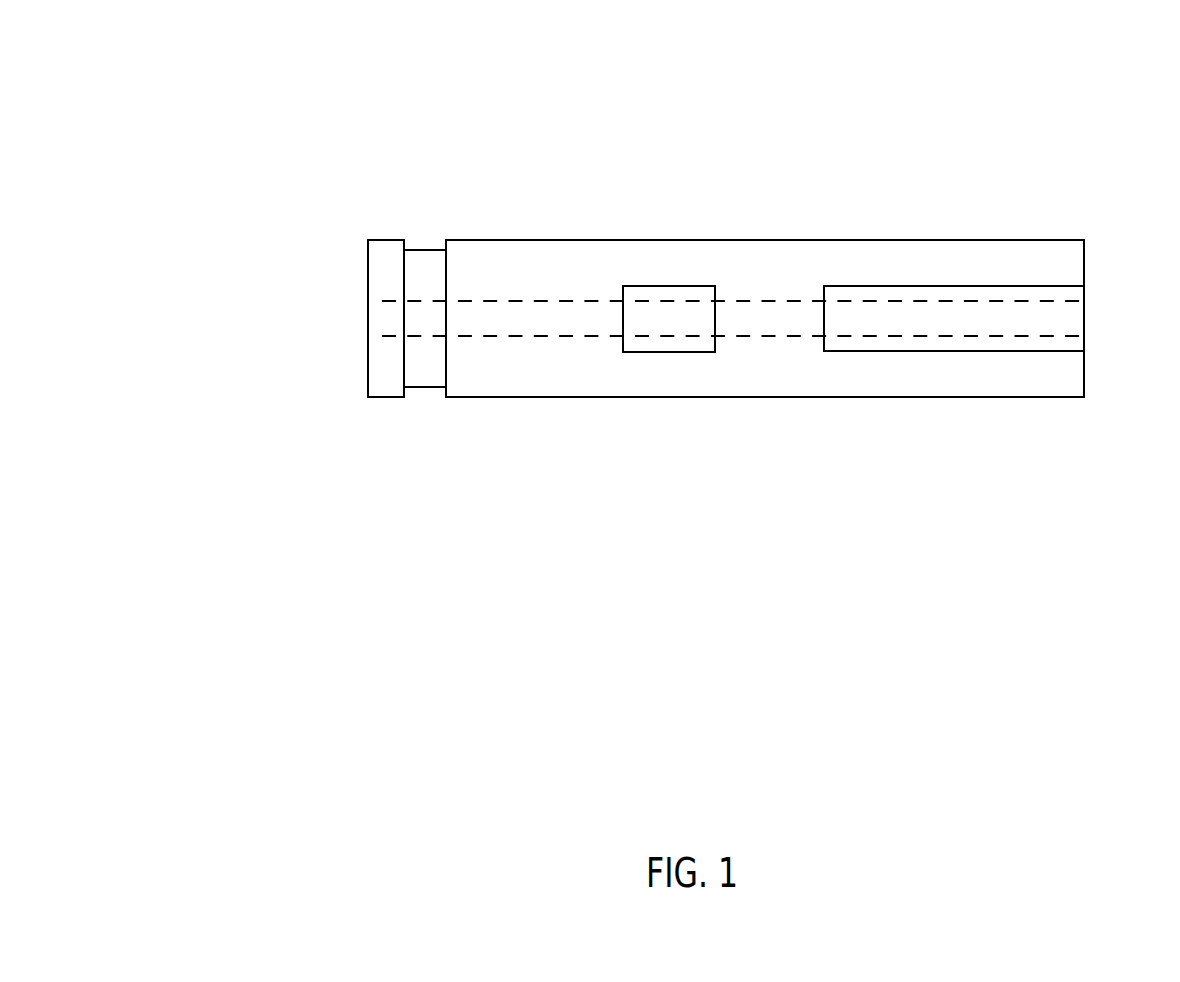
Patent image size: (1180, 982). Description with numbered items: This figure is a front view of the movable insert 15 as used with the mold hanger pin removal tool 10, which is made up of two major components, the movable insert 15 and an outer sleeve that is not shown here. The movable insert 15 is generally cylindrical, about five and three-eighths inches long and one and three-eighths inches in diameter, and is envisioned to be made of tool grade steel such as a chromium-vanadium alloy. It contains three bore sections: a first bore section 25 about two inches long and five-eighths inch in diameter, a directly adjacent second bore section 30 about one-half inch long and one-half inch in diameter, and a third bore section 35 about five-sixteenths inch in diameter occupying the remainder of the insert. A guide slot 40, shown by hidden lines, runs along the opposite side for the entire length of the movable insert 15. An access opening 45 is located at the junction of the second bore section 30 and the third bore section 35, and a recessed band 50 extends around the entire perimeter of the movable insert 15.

The mold hanger pin removal tool 10 is at (275, 628).
The movable insert 15 is at (782, 252).
The first bore section 25 is at (983, 285).
The second bore section 30 is at (780, 298).
The third bore section 35 is at (540, 300).
The guide slot 40 is at (880, 335).
The access opening 45 is at (670, 352).
The recessed band 50 is at (423, 387).